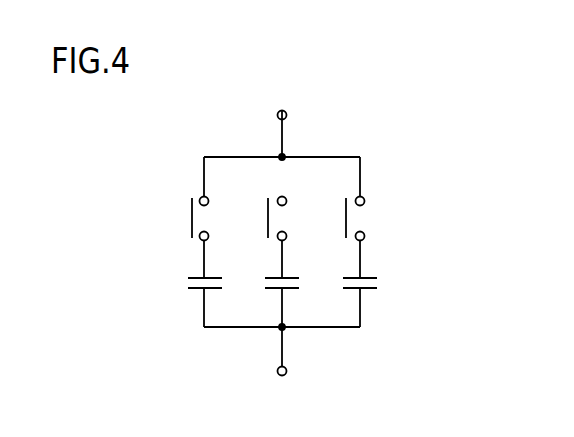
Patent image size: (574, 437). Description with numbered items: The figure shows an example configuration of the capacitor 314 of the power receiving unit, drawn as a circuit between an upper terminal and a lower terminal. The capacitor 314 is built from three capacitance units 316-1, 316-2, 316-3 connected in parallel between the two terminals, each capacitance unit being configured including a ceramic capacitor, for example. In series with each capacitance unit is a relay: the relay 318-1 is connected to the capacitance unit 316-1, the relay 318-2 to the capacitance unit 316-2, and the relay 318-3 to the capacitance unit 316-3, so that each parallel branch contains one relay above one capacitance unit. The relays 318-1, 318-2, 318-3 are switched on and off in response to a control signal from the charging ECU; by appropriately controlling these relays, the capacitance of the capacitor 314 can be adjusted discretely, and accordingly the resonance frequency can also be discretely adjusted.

The capacitor 314 is at (390, 93).
The relay 318-1 is at (190, 217).
The relay 318-2 is at (267, 218).
The relay 318-3 is at (365, 217).
The capacitance unit 316-1 is at (190, 289).
The capacitance unit 316-2 is at (275, 291).
The capacitance unit 316-3 is at (370, 290).